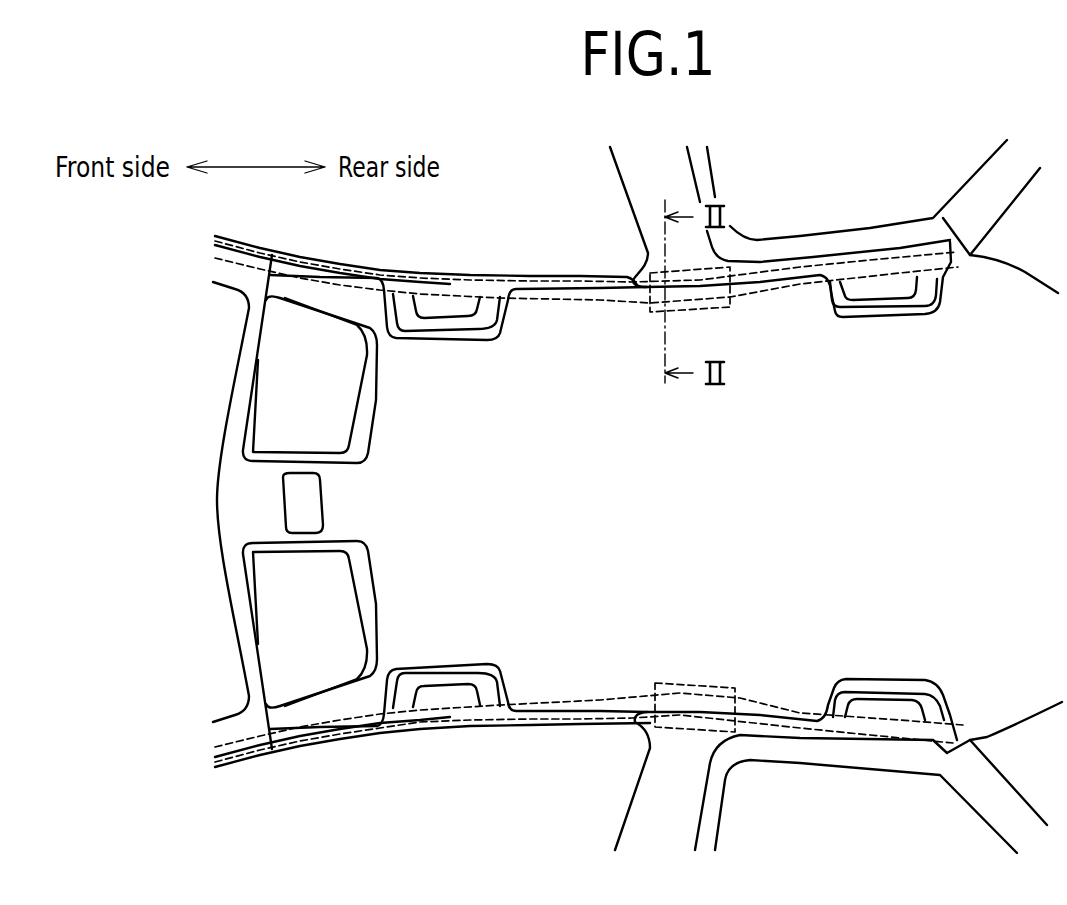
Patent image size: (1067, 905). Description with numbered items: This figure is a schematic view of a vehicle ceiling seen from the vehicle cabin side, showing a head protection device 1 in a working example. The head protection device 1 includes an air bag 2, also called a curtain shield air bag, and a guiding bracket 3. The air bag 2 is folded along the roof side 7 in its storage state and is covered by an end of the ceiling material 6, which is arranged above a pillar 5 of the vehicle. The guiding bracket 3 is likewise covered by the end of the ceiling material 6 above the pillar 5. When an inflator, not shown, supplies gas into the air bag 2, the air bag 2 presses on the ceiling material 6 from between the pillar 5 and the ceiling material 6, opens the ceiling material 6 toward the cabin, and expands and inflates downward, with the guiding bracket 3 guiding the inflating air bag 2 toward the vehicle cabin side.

The head protection device 1 is at (763, 220).
The air bag 2 is at (605, 307).
The guiding bracket 3 is at (722, 312).
The pillar 5 is at (670, 172).
The ceiling material 6 is at (752, 523).
The roof side 7 is at (769, 307).